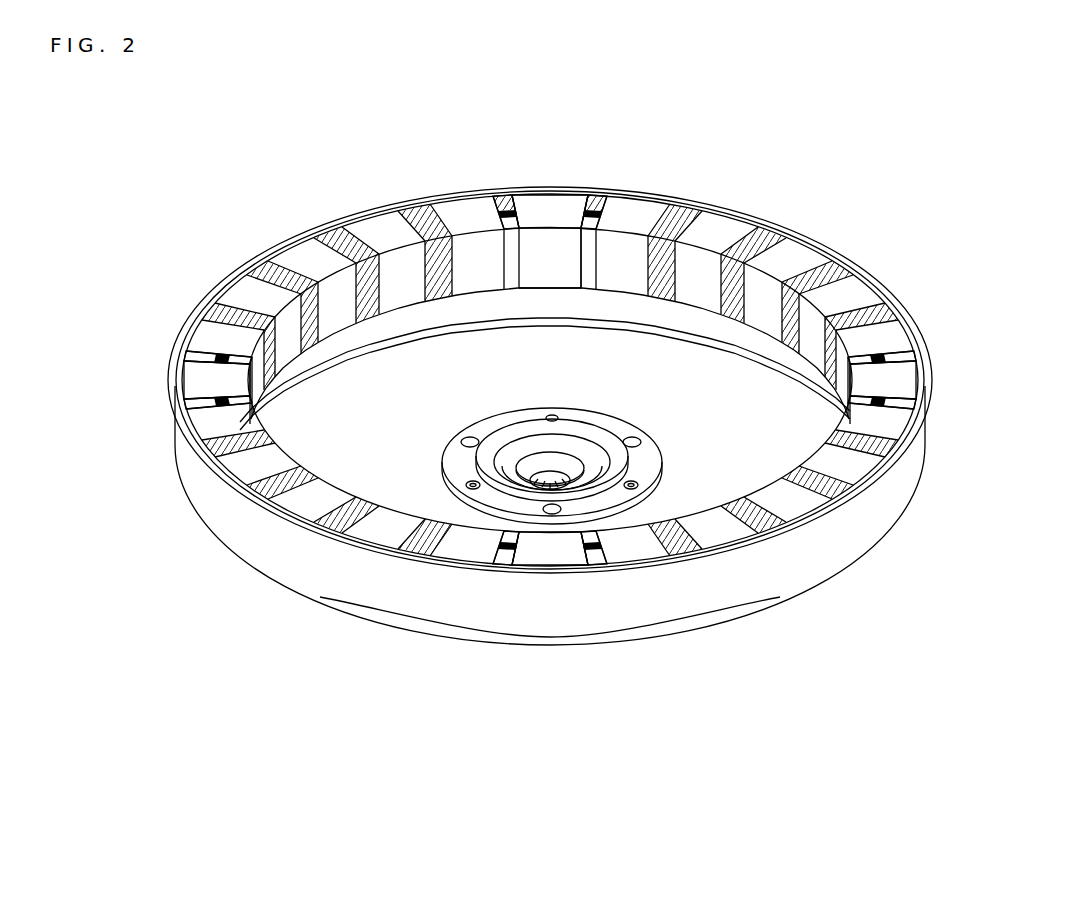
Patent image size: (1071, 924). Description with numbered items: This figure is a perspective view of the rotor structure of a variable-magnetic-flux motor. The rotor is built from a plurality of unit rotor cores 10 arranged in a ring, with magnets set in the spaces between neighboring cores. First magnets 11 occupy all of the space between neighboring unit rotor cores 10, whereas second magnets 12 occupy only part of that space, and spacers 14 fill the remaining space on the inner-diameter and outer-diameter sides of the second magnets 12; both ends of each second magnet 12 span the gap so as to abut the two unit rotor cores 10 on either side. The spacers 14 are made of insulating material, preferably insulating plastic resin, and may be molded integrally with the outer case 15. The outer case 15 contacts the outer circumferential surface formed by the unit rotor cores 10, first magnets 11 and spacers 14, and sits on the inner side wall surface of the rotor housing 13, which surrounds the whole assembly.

The unit rotor core 10 is at (553, 205).
The first magnet 11 is at (422, 222).
The second magnet 12 is at (500, 212).
The rotor housing 13 is at (237, 535).
The spacer 14 is at (506, 205).
The outer case 15 is at (198, 330).